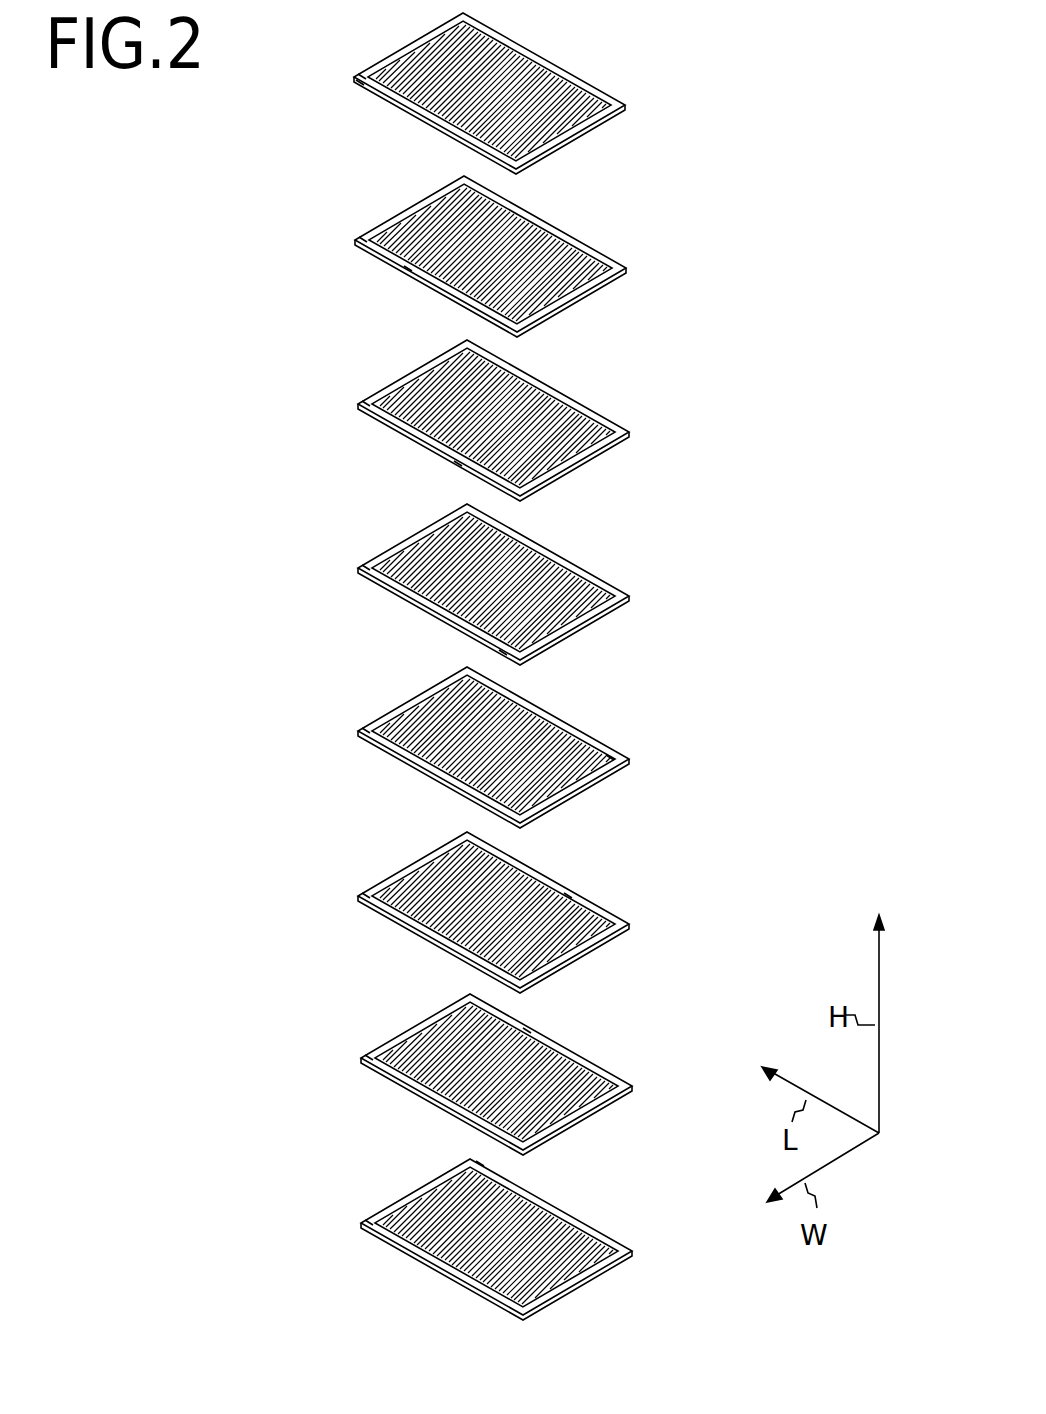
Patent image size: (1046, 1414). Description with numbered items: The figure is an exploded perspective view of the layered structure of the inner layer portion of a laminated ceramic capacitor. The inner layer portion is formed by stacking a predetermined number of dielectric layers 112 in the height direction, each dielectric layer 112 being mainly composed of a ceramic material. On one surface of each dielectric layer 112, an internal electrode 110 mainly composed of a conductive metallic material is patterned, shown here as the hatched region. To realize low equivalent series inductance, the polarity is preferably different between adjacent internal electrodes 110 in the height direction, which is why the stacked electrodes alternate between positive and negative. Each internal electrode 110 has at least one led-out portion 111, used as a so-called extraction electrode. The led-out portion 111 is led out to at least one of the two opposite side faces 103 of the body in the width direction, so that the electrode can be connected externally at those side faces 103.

The side face 103 is at (617, 91).
The internal electrode 110 is at (553, 90).
The led-out portion 111 is at (358, 82).
The dielectric layer 112 is at (362, 72).